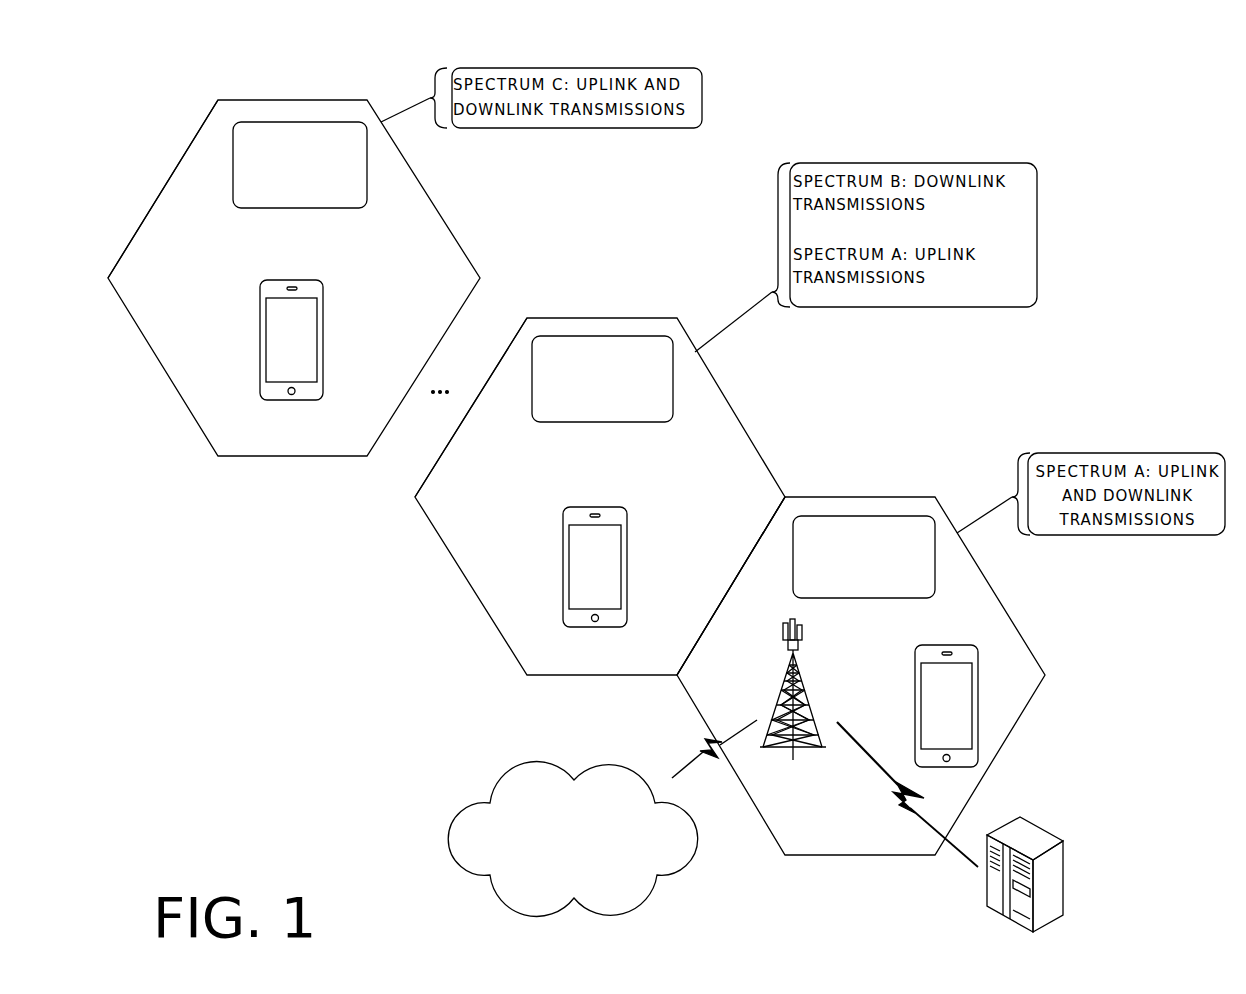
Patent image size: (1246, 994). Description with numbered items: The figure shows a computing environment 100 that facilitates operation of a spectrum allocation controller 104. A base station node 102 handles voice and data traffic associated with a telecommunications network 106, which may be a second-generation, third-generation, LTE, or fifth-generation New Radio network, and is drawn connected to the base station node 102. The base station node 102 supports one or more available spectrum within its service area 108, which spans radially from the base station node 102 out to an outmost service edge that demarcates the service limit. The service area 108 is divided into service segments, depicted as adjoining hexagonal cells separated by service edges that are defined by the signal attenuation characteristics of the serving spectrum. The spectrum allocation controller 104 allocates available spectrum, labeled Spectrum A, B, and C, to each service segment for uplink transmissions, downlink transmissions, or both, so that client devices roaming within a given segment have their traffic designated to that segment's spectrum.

The computing environment 100 is at (1054, 93).
The base station node 102 is at (783, 690).
The spectrum allocation controller 104 is at (1090, 884).
The telecommunications network 106 is at (559, 873).
The service area 108 is at (463, 584).